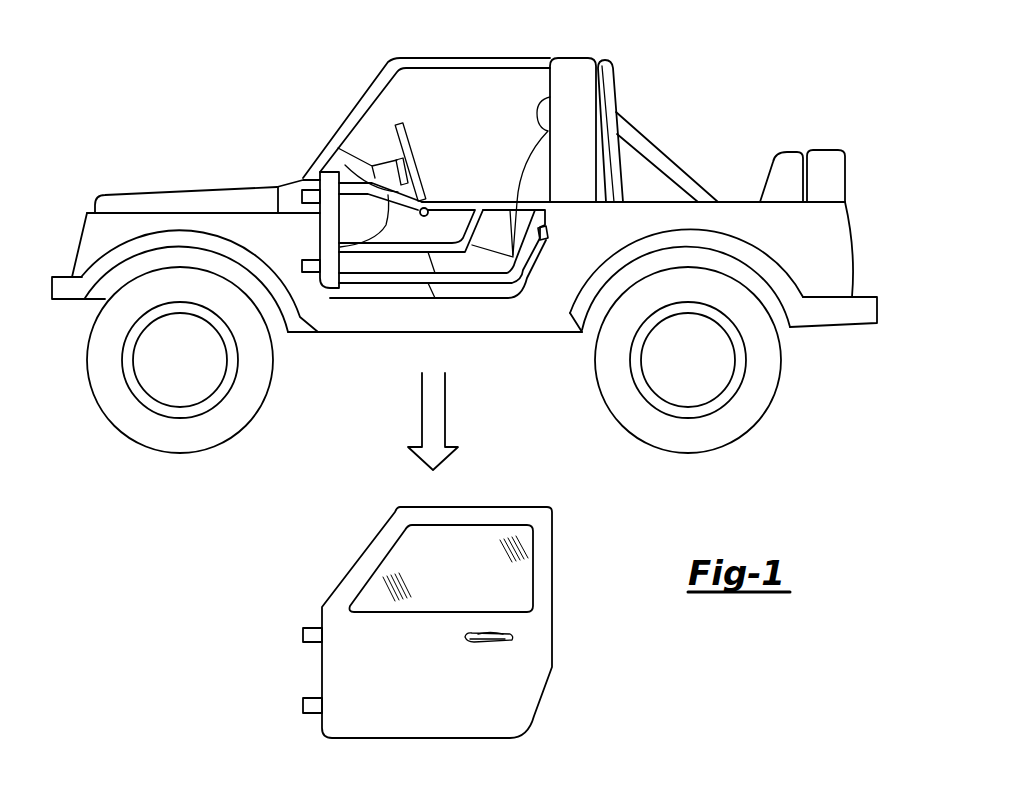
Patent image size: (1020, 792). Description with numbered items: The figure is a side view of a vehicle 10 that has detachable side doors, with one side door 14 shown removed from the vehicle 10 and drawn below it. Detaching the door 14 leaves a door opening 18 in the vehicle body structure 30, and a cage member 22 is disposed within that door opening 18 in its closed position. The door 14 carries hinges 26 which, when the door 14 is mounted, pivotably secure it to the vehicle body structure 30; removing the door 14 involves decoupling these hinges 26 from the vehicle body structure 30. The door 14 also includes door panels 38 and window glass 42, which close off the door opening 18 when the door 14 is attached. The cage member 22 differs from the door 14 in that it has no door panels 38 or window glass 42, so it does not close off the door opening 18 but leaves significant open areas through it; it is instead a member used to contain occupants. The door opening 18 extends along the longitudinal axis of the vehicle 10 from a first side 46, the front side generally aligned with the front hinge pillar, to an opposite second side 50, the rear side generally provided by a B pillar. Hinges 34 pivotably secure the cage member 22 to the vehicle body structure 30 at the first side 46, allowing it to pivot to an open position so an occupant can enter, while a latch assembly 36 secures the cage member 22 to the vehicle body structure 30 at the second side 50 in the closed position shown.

The vehicle 10 is at (760, 84).
The side door 14 is at (429, 623).
The door opening 18 is at (474, 84).
The cage member 22 is at (493, 202).
The hinges 26 is at (303, 704).
The vehicle body structure 30 is at (222, 218).
The hinges 34 is at (312, 260).
The latch assembly 36 is at (545, 212).
The door panels 38 is at (524, 673).
The window glass 42 is at (474, 577).
The first side 46 is at (320, 268).
The second side 50 is at (545, 238).